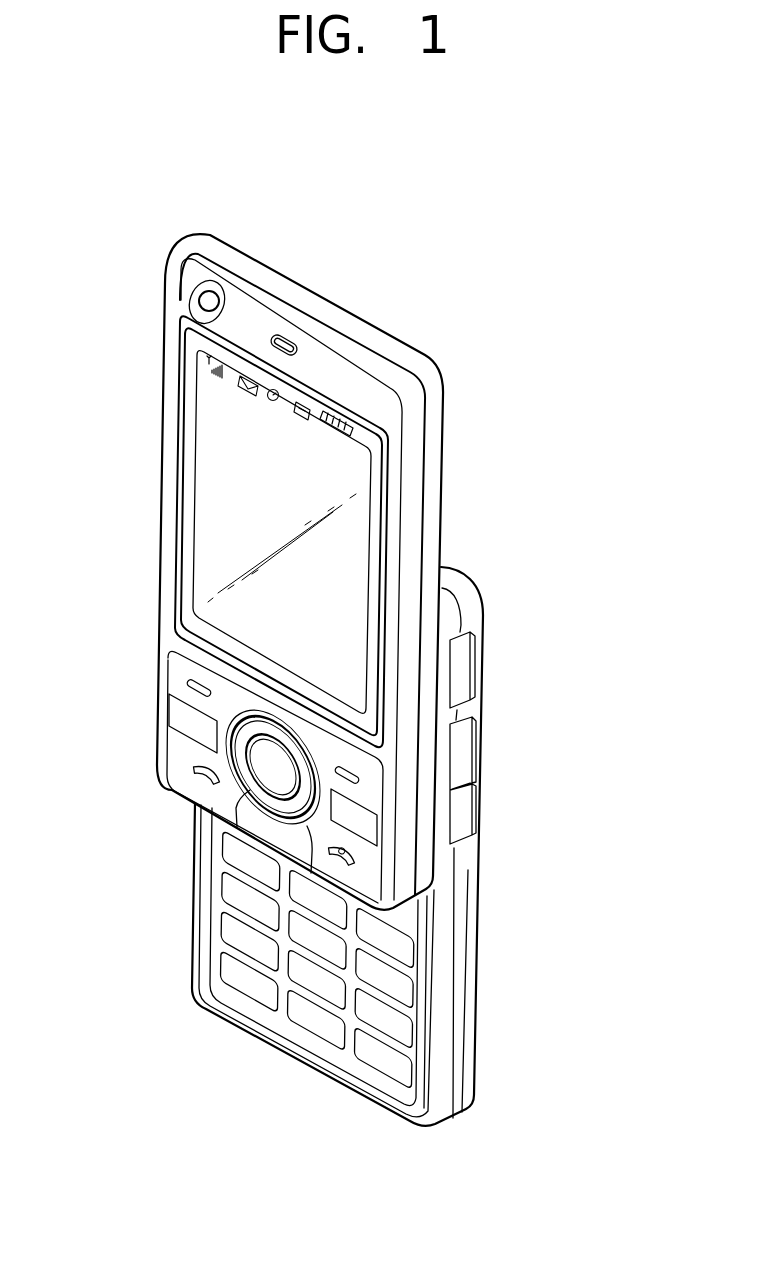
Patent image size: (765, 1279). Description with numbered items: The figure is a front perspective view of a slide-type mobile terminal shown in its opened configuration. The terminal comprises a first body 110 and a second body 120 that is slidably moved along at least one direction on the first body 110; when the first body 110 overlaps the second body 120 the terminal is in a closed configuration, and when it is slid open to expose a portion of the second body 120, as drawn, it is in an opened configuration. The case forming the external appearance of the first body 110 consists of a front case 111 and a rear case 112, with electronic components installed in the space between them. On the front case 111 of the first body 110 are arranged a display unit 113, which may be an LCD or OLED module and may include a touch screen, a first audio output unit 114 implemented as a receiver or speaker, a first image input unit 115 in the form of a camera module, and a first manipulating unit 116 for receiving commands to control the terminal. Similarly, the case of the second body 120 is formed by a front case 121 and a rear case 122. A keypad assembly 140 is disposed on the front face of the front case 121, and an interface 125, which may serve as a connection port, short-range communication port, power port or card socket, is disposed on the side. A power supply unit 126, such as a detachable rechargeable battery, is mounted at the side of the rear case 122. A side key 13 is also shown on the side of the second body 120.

The first body 110 is at (126, 377).
The front case 111 is at (413, 470).
The rear case 112 is at (435, 431).
The display unit 113 is at (210, 477).
The first audio output unit 114 is at (284, 340).
The first image input unit 115 is at (209, 301).
The first manipulating unit 116 is at (185, 717).
The second body 120 is at (186, 877).
The front case 121 is at (450, 605).
The rear case 122 is at (477, 630).
The interface 125 is at (465, 662).
The side key 13 is at (465, 808).
The power supply unit 126 is at (466, 957).
The keypad assembly 140 is at (223, 937).